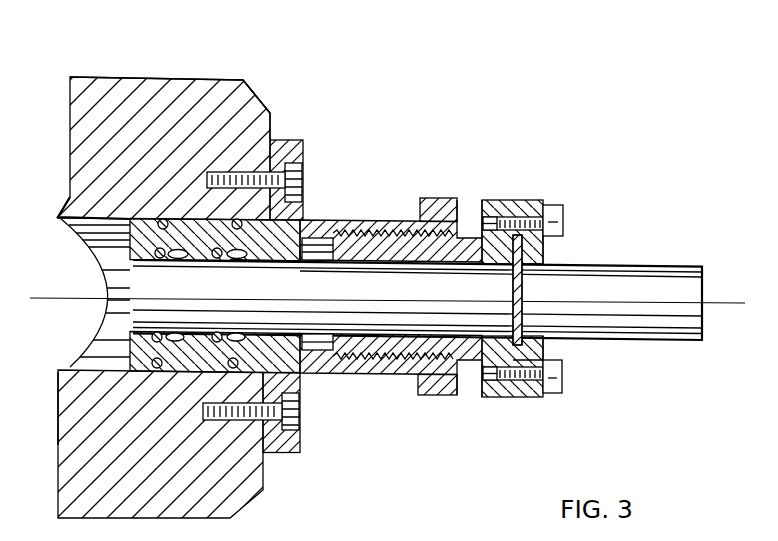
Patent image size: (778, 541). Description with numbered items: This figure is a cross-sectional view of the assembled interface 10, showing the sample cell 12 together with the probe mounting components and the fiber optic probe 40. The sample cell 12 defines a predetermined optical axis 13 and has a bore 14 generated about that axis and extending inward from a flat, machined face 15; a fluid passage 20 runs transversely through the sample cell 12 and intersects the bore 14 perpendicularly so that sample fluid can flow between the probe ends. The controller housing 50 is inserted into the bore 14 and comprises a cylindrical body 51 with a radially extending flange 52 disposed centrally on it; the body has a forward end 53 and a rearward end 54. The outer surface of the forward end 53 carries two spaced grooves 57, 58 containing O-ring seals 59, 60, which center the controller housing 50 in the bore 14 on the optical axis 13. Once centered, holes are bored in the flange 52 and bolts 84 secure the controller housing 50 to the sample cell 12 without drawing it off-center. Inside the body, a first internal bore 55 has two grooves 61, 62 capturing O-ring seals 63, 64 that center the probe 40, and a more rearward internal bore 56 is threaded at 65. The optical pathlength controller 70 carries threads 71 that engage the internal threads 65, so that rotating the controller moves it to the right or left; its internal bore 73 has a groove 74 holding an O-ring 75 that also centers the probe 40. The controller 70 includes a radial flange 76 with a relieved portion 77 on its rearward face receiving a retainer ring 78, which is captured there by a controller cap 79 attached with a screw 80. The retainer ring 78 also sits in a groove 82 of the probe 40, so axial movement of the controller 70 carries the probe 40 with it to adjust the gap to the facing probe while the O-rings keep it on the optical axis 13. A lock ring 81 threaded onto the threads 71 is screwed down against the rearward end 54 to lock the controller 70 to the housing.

The interface 10 is at (535, 70).
The sample cell 12 is at (186, 77).
The optical axis 13 is at (745, 300).
The bore 14 is at (62, 206).
The face 15 is at (270, 127).
The fluid passage 20 is at (75, 368).
The fiber optic probe 40 is at (693, 266).
The controller housing 50 is at (367, 218).
The cylindrical body 51 is at (400, 375).
The radially extending flange 52 is at (300, 139).
The forward end 53 is at (60, 408).
The rearward end 54 is at (403, 220).
The first internal bore 55 is at (98, 267).
The rearward internal bore 56 is at (327, 248).
The groove 57 is at (60, 444).
The groove 58 is at (310, 352).
The O-ring seal 59 is at (158, 364).
The O-ring seal 60 is at (232, 366).
The groove 61 is at (177, 258).
The groove 62 is at (250, 258).
The O-ring seal 63 is at (121, 282).
The O-ring seal 64 is at (237, 258).
The threads 65 is at (370, 372).
The optical pathlength controller 70 is at (495, 200).
The threads 71 is at (435, 198).
The internal bore 73 is at (445, 397).
The groove 74 is at (490, 396).
The O-ring 75 is at (512, 218).
The radial flange 76 is at (488, 398).
The relieved portion 77 is at (540, 210).
The retainer ring 78 is at (544, 253).
The controller cap 79 is at (546, 344).
The screw 80 is at (564, 215).
The lock ring 81 is at (462, 200).
The groove 82 is at (519, 293).
The bolts 84 is at (303, 178).